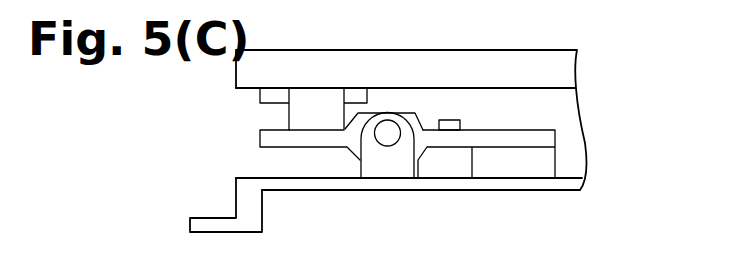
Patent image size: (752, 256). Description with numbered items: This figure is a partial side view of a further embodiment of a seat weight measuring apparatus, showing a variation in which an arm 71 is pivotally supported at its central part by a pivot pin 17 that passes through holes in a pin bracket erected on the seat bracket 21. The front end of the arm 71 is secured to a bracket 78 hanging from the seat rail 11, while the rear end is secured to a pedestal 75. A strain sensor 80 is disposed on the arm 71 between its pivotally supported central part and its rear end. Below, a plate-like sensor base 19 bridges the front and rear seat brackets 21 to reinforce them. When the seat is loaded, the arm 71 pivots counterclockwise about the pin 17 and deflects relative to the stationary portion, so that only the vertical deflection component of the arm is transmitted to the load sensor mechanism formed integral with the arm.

The seat rail 11 is at (428, 70).
The strain sensor 80 is at (450, 118).
The bracket 78 is at (297, 117).
The arm 71 is at (302, 147).
The pivot pin 17 is at (377, 165).
The pedestal 75 is at (540, 163).
The sensor base 19 is at (540, 191).
The seat bracket 21 is at (247, 207).